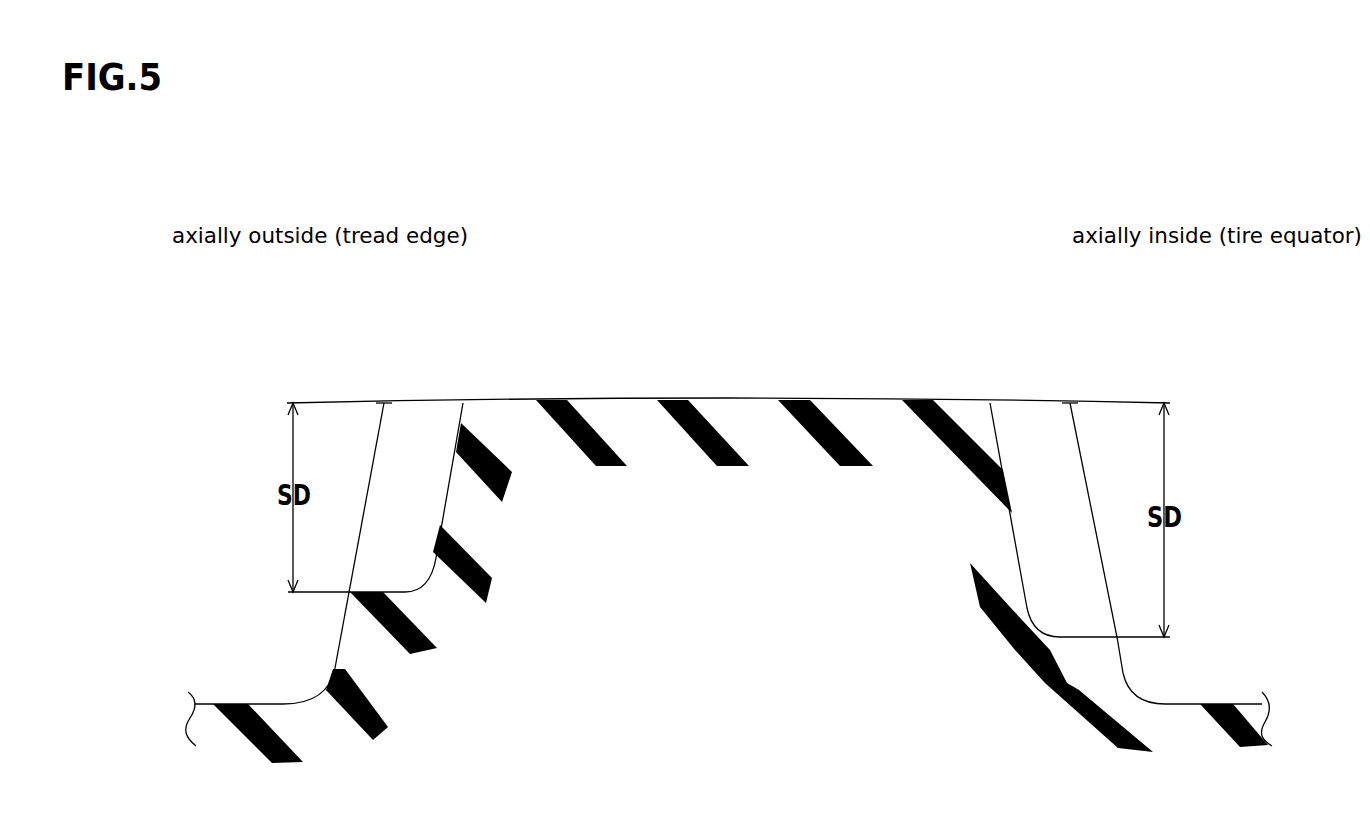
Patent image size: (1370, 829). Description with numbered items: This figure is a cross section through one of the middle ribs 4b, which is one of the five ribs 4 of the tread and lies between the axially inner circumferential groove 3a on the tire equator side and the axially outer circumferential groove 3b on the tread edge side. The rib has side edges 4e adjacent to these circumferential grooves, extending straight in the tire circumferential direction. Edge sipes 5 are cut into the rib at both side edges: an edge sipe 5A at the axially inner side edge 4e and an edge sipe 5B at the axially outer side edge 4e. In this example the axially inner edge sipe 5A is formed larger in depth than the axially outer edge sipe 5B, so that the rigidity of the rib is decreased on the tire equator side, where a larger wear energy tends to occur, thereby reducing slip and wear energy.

The rib 4 is at (728, 344).
The middle rib 4b is at (793, 382).
The edge sipe 5 is at (729, 479).
The axially inner edge sipe 5A is at (1028, 422).
The axially outer edge sipe 5B is at (428, 428).
The side edge 4e is at (385, 402).
The circumferential groove 3a is at (1269, 562).
The circumferential groove 3b is at (226, 563).